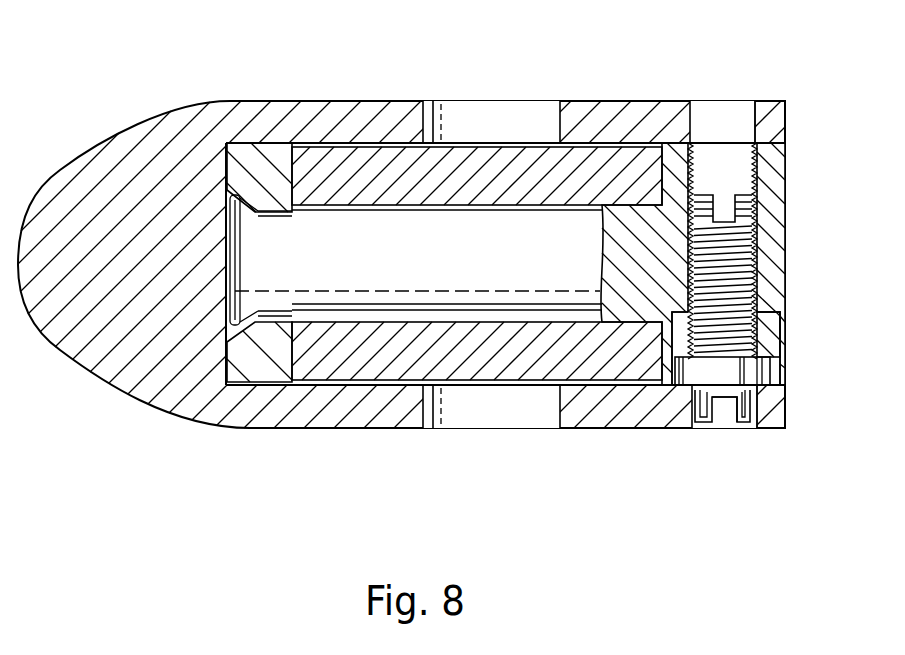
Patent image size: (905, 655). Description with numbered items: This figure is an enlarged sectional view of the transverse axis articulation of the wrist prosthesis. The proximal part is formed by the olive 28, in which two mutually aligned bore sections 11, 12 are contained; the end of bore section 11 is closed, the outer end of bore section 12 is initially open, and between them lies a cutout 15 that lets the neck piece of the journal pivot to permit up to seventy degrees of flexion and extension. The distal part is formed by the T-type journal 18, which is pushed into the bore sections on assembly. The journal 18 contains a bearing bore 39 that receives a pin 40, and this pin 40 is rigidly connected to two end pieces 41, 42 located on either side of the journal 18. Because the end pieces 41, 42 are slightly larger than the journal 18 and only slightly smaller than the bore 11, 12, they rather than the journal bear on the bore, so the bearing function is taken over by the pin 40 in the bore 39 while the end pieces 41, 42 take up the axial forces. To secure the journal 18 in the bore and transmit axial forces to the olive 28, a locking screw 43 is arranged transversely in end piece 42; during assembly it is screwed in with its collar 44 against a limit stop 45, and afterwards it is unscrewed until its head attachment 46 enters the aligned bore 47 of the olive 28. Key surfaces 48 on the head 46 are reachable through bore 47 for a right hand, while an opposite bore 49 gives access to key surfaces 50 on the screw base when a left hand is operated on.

The olive 28 is at (117, 146).
The bore section 11 is at (385, 150).
The bore section 12 is at (613, 156).
The cutout 15 is at (485, 117).
The journal 18 is at (420, 160).
The bearing bore 39 is at (350, 210).
The pin 40 is at (540, 223).
The end piece 41 is at (263, 148).
The end piece 42 is at (773, 176).
The locking screw 43 is at (757, 232).
The collar 44 is at (765, 378).
The limit stop 45 is at (780, 320).
The head attachment 46 is at (707, 422).
The bore 47 is at (770, 410).
The key surfaces 48 is at (728, 410).
The bore 49 is at (733, 123).
The key surfaces 50 is at (723, 212).